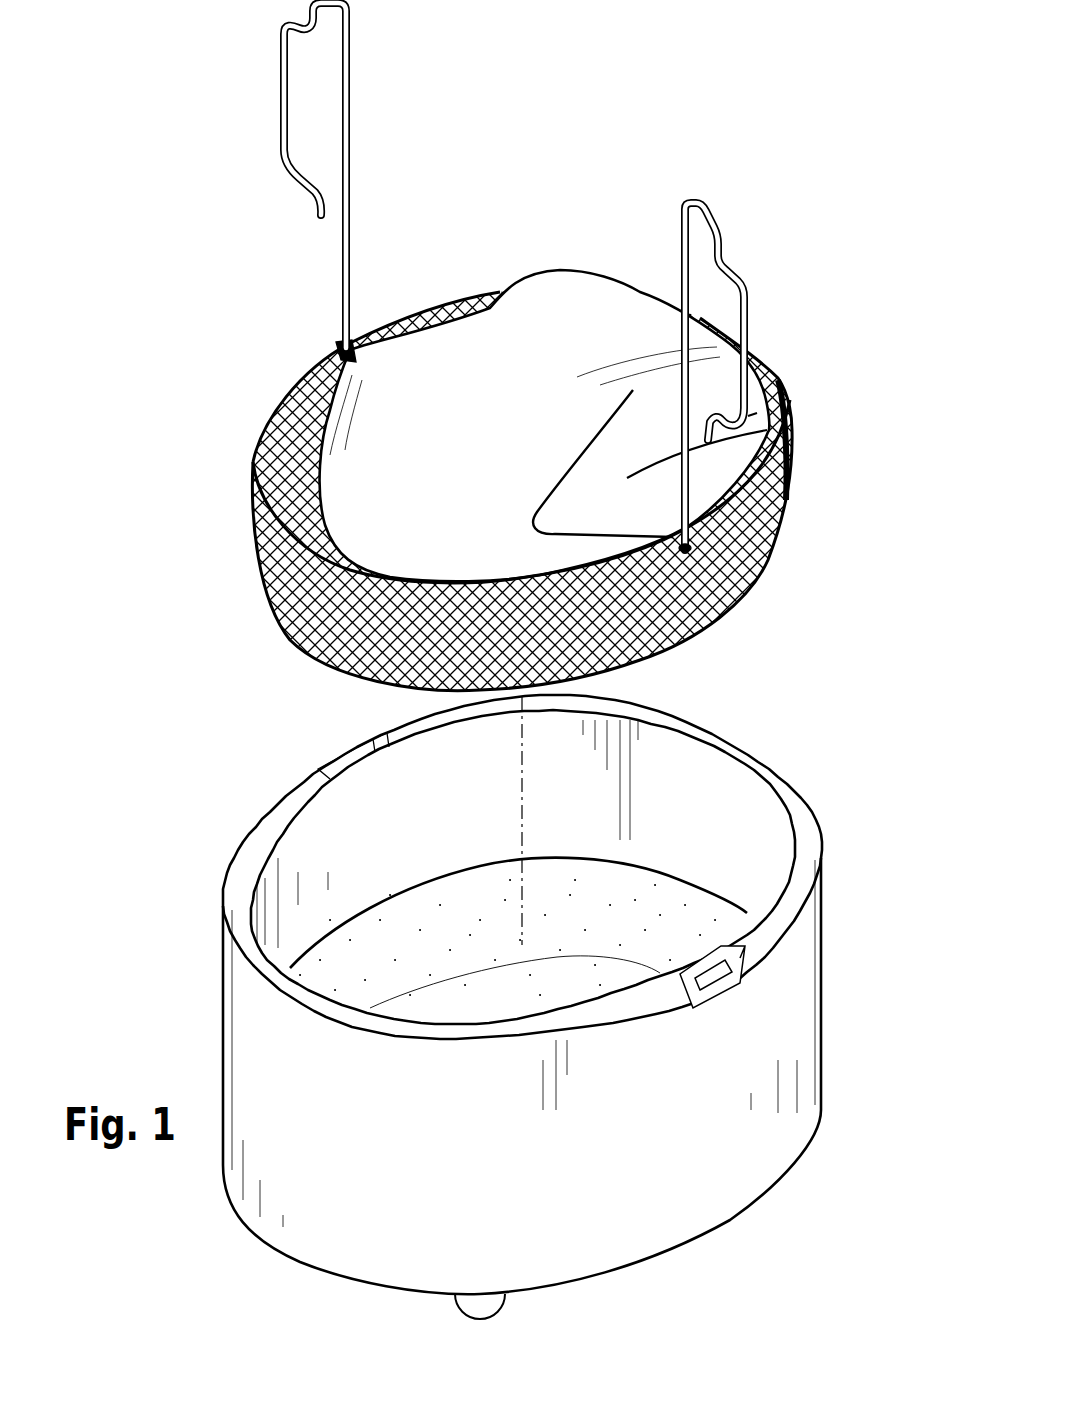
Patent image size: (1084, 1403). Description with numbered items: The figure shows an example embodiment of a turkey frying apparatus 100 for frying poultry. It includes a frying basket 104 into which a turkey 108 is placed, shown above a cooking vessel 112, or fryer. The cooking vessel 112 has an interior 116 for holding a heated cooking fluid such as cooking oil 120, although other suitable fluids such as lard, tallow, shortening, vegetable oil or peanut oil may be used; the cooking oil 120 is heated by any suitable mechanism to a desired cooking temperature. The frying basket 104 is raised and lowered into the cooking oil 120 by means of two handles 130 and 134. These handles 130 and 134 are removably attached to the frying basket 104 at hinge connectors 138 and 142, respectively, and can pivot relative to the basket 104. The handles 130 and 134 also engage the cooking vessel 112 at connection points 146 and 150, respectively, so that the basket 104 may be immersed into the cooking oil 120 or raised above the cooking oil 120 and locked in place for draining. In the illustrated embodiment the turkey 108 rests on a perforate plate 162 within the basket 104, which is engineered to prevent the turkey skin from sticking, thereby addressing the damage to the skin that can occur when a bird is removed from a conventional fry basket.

The turkey frying apparatus 100 is at (562, 661).
The frying basket 104 is at (539, 447).
The turkey 108 is at (586, 323).
The cooking vessel 112 is at (825, 922).
The interior 116 is at (728, 812).
The cooking oil 120 is at (327, 953).
The handle 130 is at (347, 107).
The handle 134 is at (747, 318).
The hinge connector 138 is at (350, 345).
The hinge connector 142 is at (727, 600).
The connection point 146 is at (340, 777).
The connection point 150 is at (790, 973).
The perforate plate 162 is at (260, 448).